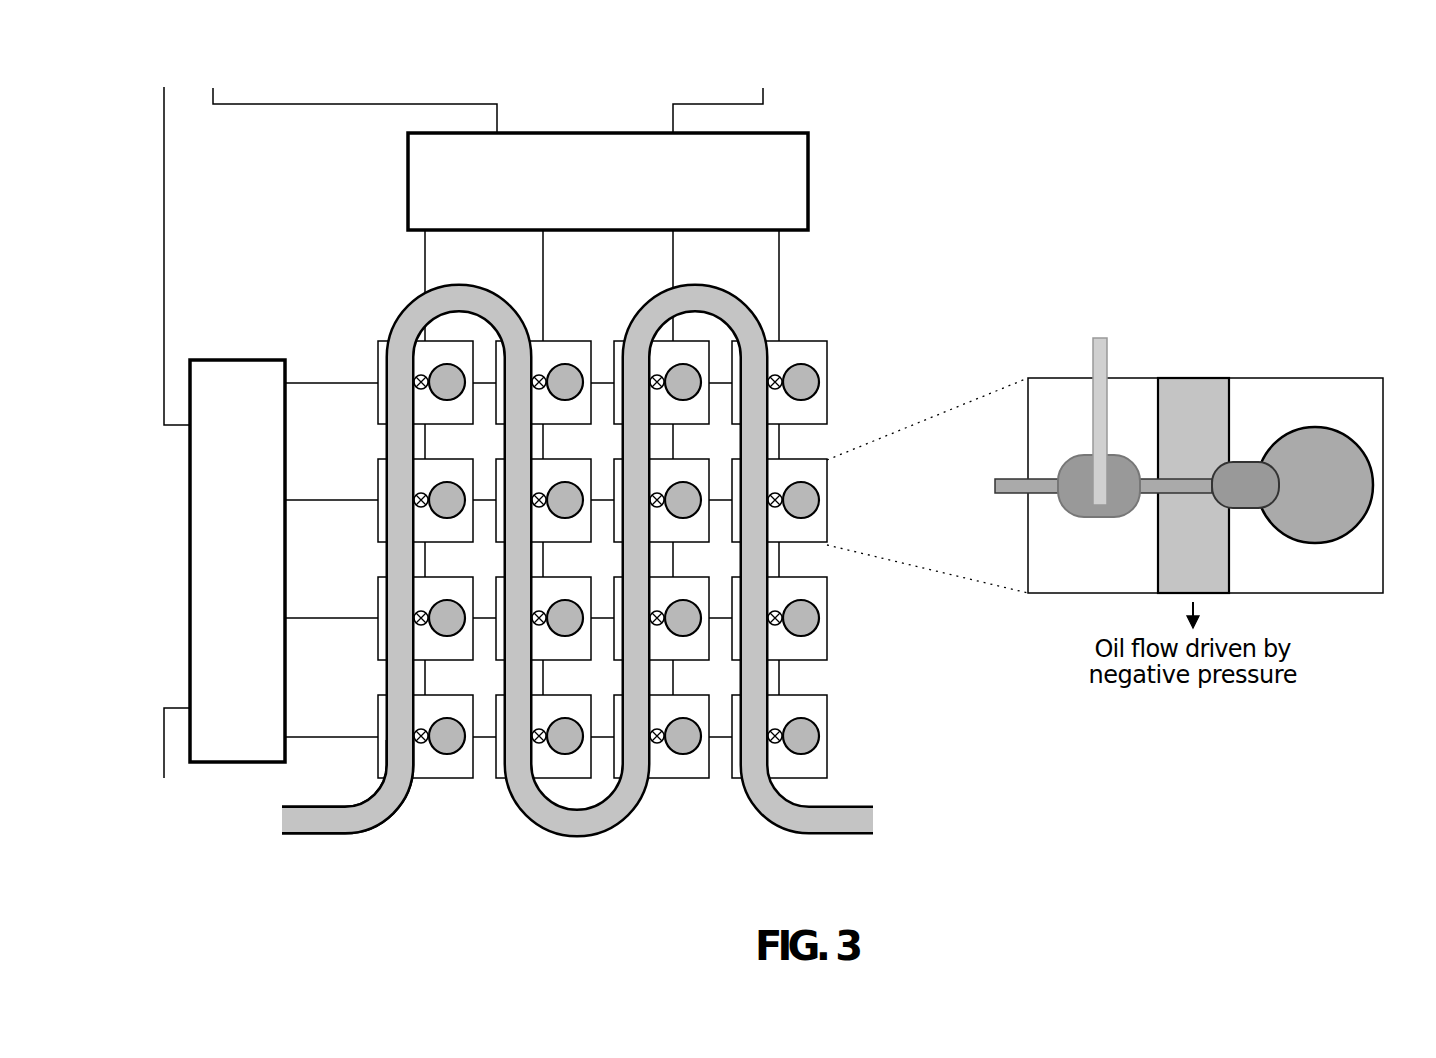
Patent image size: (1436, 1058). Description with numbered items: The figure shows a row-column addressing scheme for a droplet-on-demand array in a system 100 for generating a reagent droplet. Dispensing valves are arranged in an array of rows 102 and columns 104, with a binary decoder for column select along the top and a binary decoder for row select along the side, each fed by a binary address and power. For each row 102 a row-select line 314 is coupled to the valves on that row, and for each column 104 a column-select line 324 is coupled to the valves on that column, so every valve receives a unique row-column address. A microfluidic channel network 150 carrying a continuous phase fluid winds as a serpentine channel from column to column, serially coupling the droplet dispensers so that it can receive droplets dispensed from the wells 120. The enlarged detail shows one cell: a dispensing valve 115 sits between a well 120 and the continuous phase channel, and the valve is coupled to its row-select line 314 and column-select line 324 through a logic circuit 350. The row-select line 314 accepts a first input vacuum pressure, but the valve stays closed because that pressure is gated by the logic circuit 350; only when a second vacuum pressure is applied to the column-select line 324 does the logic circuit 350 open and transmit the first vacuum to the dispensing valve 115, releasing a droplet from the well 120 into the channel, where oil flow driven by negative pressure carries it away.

The system 100 is at (1346, 119).
The row 102 is at (855, 750).
The column 104 is at (665, 805).
The microfluidic channel network 150 is at (350, 833).
The dispensing valve 115 is at (1247, 457).
The well 120 is at (1327, 445).
The row-select line 314 is at (1008, 494).
The column-select line 324 is at (1093, 353).
The logic circuit 350 is at (1100, 485).